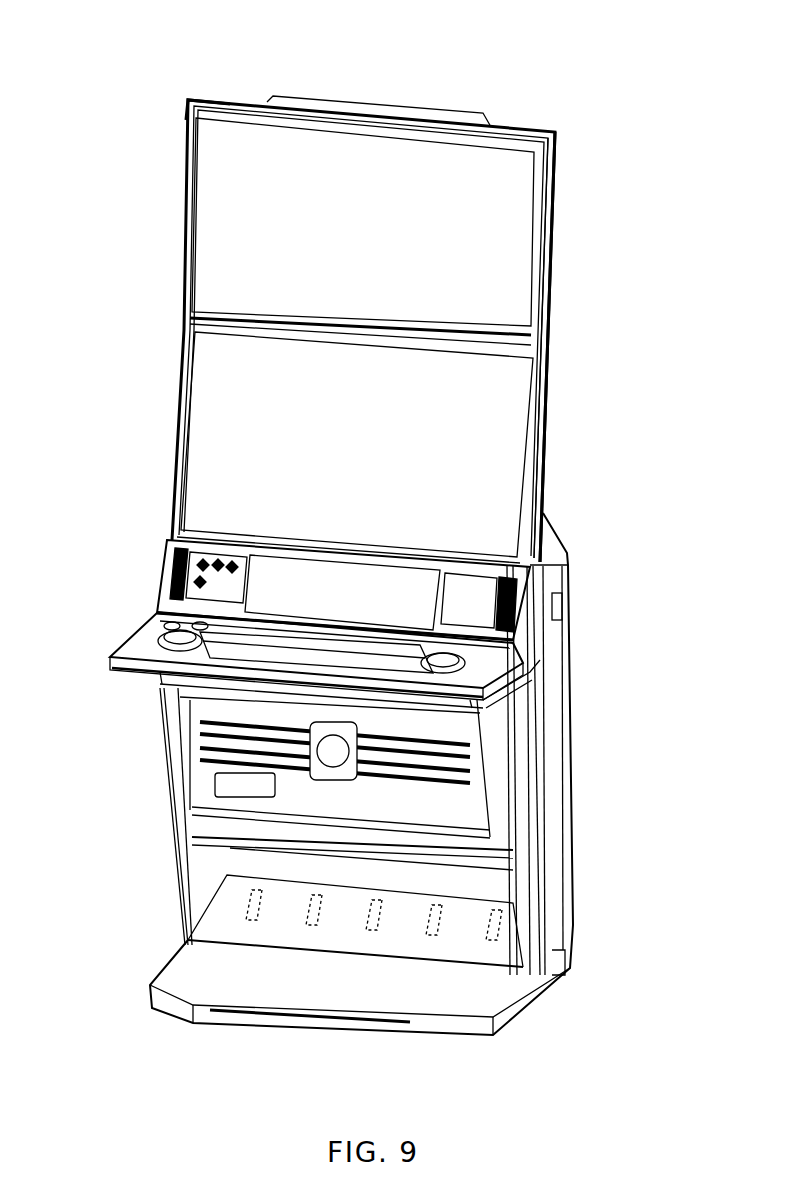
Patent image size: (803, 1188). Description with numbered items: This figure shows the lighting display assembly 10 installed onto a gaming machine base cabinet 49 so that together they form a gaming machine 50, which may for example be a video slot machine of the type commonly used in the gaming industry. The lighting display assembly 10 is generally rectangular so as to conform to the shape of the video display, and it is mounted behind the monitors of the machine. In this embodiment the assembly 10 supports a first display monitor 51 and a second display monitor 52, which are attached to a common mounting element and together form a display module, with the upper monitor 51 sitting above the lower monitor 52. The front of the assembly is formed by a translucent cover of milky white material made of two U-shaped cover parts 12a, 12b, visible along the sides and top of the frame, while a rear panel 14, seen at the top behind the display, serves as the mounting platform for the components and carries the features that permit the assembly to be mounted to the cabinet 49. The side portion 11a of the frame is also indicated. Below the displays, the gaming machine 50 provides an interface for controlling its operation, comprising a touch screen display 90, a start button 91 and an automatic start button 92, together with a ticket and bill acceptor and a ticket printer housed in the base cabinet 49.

The gaming machine 50 is at (84, 58).
The lighting display assembly 10 is at (556, 122).
The side frame portion 11a is at (553, 193).
The translucent cover part 12a is at (550, 222).
The translucent cover part 12b is at (192, 98).
The rear panel 14 is at (497, 118).
The first display monitor 51 is at (207, 228).
The second display monitor 52 is at (205, 397).
The touch screen display 90 is at (197, 668).
The start button 91 is at (530, 677).
The automatic start button 92 is at (160, 633).
The gaming machine base cabinet 49 is at (627, 635).